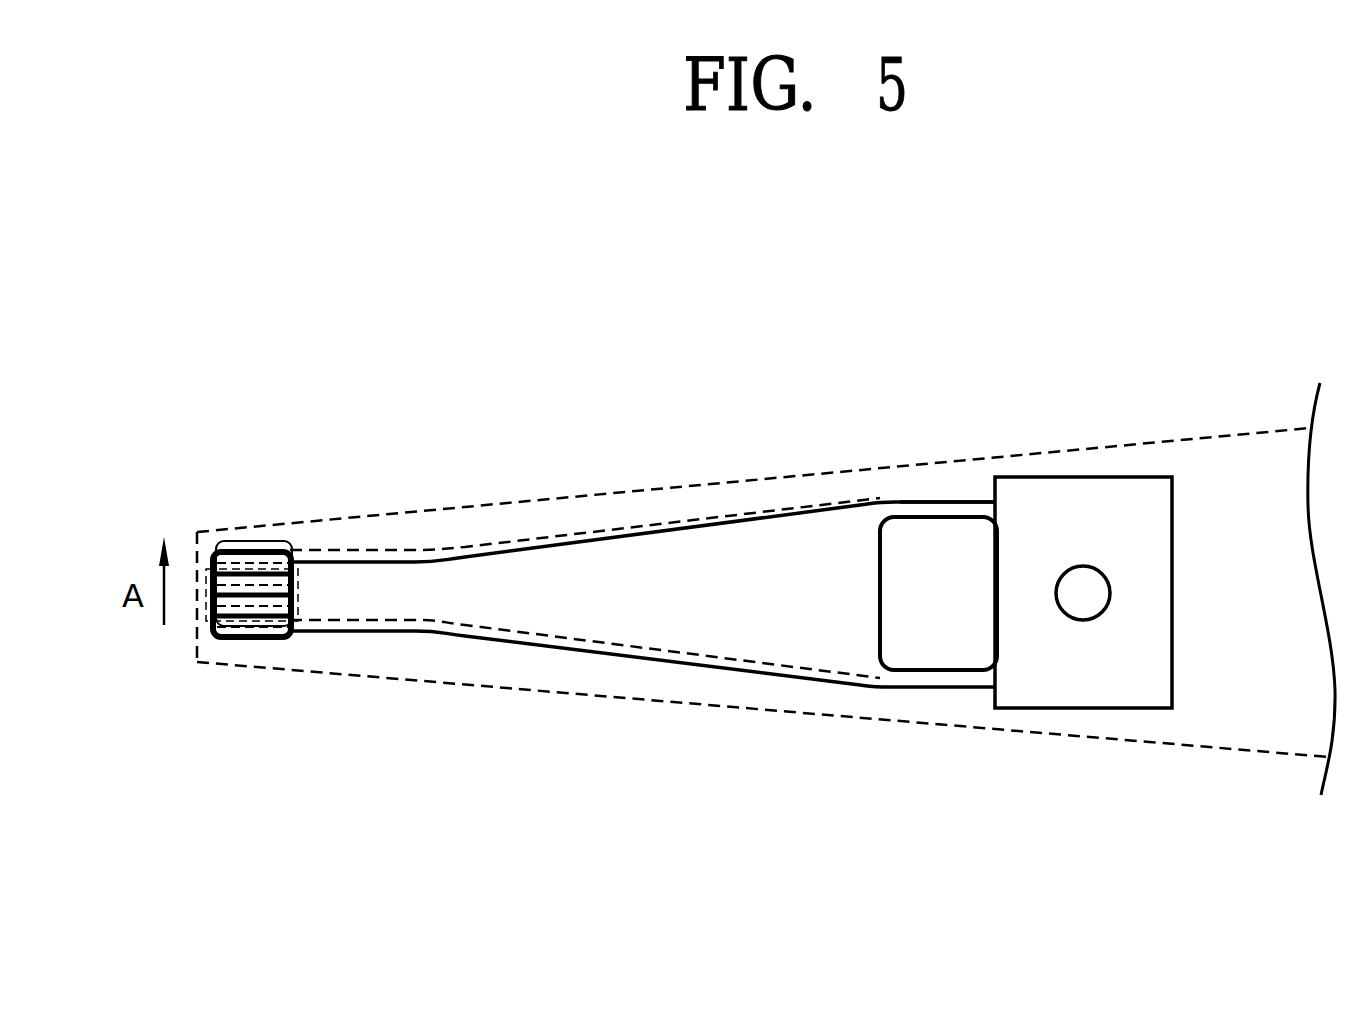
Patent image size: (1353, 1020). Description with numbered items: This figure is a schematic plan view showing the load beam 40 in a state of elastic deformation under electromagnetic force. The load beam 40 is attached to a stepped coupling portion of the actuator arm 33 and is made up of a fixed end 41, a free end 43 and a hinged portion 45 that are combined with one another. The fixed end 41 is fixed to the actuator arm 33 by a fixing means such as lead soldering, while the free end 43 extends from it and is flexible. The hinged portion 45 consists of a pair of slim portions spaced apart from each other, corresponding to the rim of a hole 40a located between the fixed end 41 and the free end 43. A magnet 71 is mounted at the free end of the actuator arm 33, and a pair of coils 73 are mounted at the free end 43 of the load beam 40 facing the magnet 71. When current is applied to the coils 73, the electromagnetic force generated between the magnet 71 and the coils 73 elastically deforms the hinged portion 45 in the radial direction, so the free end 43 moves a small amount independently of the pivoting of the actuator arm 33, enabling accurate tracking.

The actuator arm 33 is at (838, 473).
The load beam 40 is at (1160, 464).
The hole 40a is at (925, 627).
The fixed end 41 is at (1081, 503).
The free end 43 is at (653, 528).
The hinged portion 45 is at (963, 500).
The magnet 71 is at (212, 625).
The coils 73 is at (250, 638).